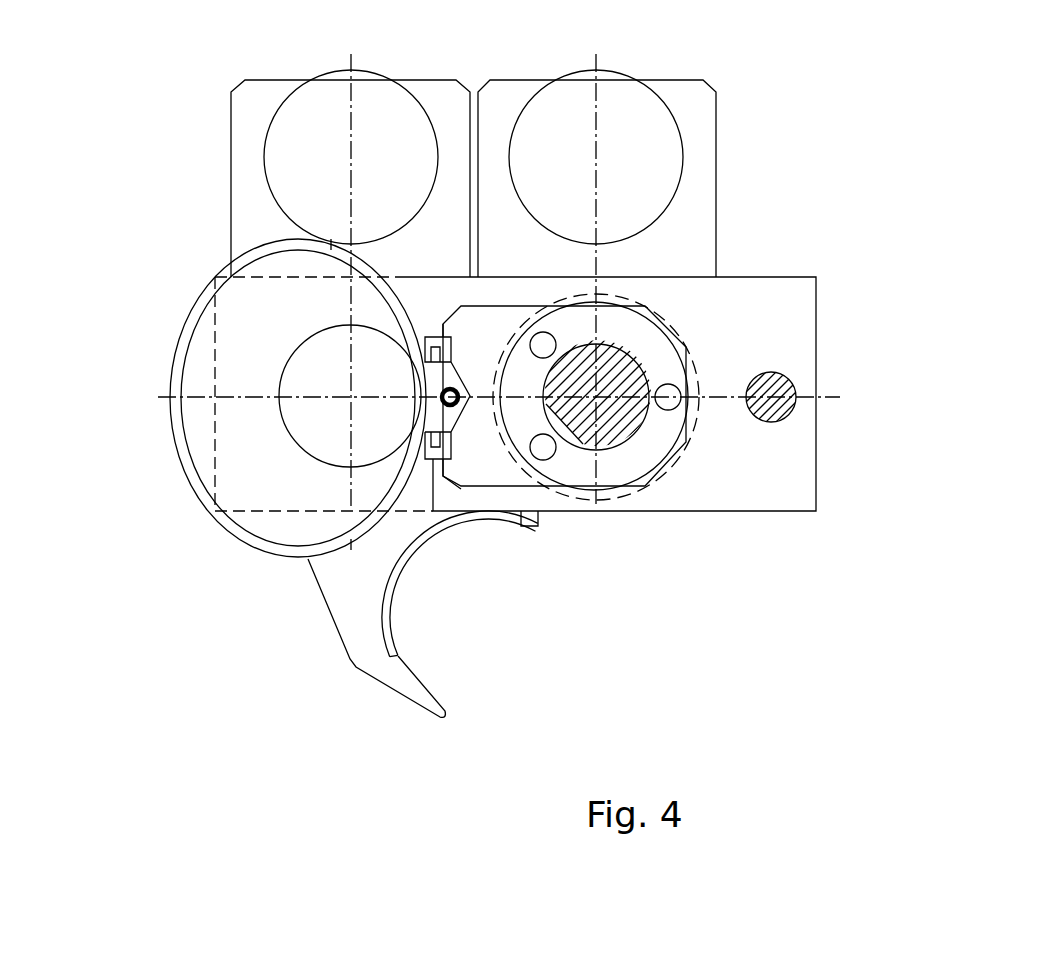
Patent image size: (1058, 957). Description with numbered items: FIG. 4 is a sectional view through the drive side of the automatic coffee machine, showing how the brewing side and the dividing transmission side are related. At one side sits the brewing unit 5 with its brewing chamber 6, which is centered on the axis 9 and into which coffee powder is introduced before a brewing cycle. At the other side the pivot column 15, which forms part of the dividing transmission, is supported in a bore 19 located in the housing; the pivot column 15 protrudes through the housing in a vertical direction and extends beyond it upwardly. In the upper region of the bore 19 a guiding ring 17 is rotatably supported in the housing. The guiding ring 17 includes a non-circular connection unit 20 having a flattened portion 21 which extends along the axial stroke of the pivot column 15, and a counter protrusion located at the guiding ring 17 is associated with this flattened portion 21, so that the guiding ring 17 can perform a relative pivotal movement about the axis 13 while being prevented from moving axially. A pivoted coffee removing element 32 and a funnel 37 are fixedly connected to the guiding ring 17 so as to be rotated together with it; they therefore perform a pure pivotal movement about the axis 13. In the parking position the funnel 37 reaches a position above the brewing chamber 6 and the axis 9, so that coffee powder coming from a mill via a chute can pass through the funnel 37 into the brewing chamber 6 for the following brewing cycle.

The brewing unit 5 is at (282, 472).
The brewing chamber 6 is at (314, 419).
The axis 9 is at (352, 397).
The axis 13 is at (598, 398).
The pivot column 15 is at (613, 419).
The guiding ring 17 is at (672, 468).
The bore 19 is at (613, 419).
The non-circular connection unit 20 is at (585, 455).
The flattened portion 21 is at (573, 430).
The coffee removing element 32 is at (400, 657).
The funnel 37 is at (202, 350).